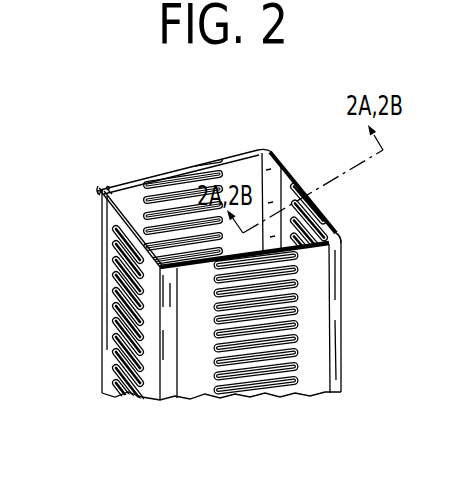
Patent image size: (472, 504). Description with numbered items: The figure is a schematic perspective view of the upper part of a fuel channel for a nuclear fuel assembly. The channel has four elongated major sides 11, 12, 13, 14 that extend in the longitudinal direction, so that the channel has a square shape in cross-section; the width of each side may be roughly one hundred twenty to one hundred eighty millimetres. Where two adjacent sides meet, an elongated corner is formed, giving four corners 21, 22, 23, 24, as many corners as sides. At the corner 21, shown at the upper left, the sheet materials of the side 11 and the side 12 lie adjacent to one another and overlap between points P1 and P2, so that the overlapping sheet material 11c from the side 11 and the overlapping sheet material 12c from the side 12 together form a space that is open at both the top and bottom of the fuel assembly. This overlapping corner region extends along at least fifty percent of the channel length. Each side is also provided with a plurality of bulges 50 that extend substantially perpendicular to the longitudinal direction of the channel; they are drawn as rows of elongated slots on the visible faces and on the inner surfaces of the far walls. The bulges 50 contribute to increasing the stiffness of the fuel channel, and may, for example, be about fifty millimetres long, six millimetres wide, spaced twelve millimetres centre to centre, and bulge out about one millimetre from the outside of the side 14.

The side 11 is at (183, 168).
The side 12 is at (108, 255).
The side 13 is at (310, 312).
The side 14 is at (286, 177).
The overlapping sheet material 11c is at (108, 189).
The overlapping sheet material 12c is at (100, 188).
The corner 21 is at (84, 181).
The corner 22 is at (167, 302).
The corner 23 is at (356, 234).
The corner 24 is at (286, 147).
The bulges 50 is at (293, 258).
The point P1 is at (108, 186).
The point P2 is at (98, 192).